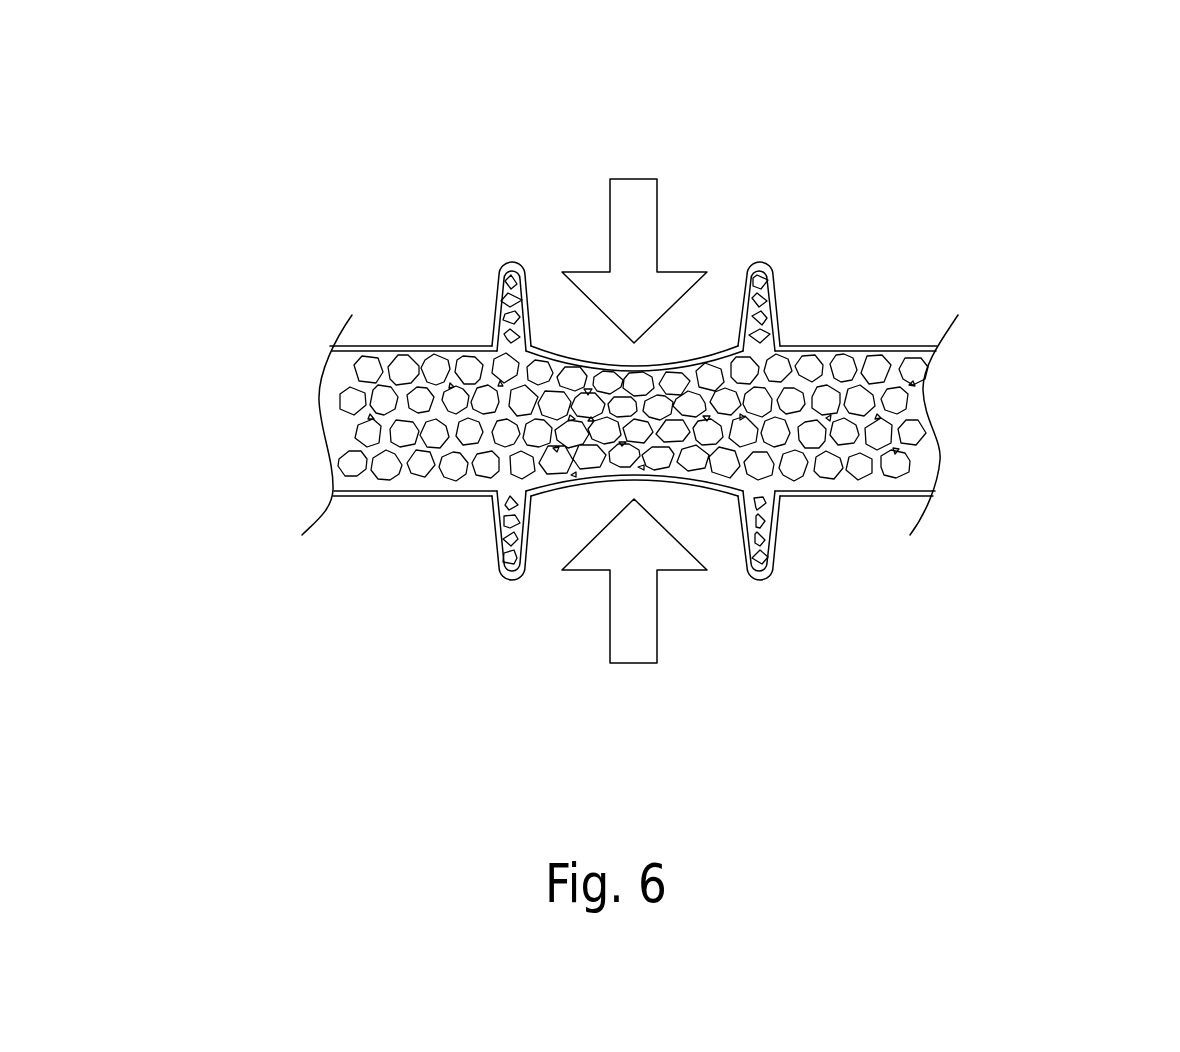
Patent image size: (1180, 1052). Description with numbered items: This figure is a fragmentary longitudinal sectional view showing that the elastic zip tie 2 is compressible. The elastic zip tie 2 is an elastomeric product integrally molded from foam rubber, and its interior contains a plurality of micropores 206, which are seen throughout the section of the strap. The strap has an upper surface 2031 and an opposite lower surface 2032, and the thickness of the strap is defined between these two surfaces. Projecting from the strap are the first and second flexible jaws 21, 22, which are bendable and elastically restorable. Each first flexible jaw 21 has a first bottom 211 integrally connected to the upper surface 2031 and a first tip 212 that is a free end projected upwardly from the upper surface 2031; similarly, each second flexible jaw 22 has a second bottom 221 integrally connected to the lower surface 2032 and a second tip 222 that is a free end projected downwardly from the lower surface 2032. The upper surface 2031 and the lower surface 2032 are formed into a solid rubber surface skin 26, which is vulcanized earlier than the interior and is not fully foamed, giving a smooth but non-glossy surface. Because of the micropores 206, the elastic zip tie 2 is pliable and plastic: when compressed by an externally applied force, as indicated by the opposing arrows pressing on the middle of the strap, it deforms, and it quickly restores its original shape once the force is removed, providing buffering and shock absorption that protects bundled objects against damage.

The elastic zip tie 2 is at (1153, 56).
The first flexible jaw 21 is at (763, 288).
The first bottom 211 is at (485, 342).
The first tip 212 is at (505, 262).
The second flexible jaw 22 is at (763, 560).
The second bottom 221 is at (492, 498).
The second tip 222 is at (507, 577).
The solid rubber surface skin 26 is at (398, 348).
The upper surface 2031 is at (873, 342).
The lower surface 2032 is at (855, 500).
The micropores 206 is at (930, 377).